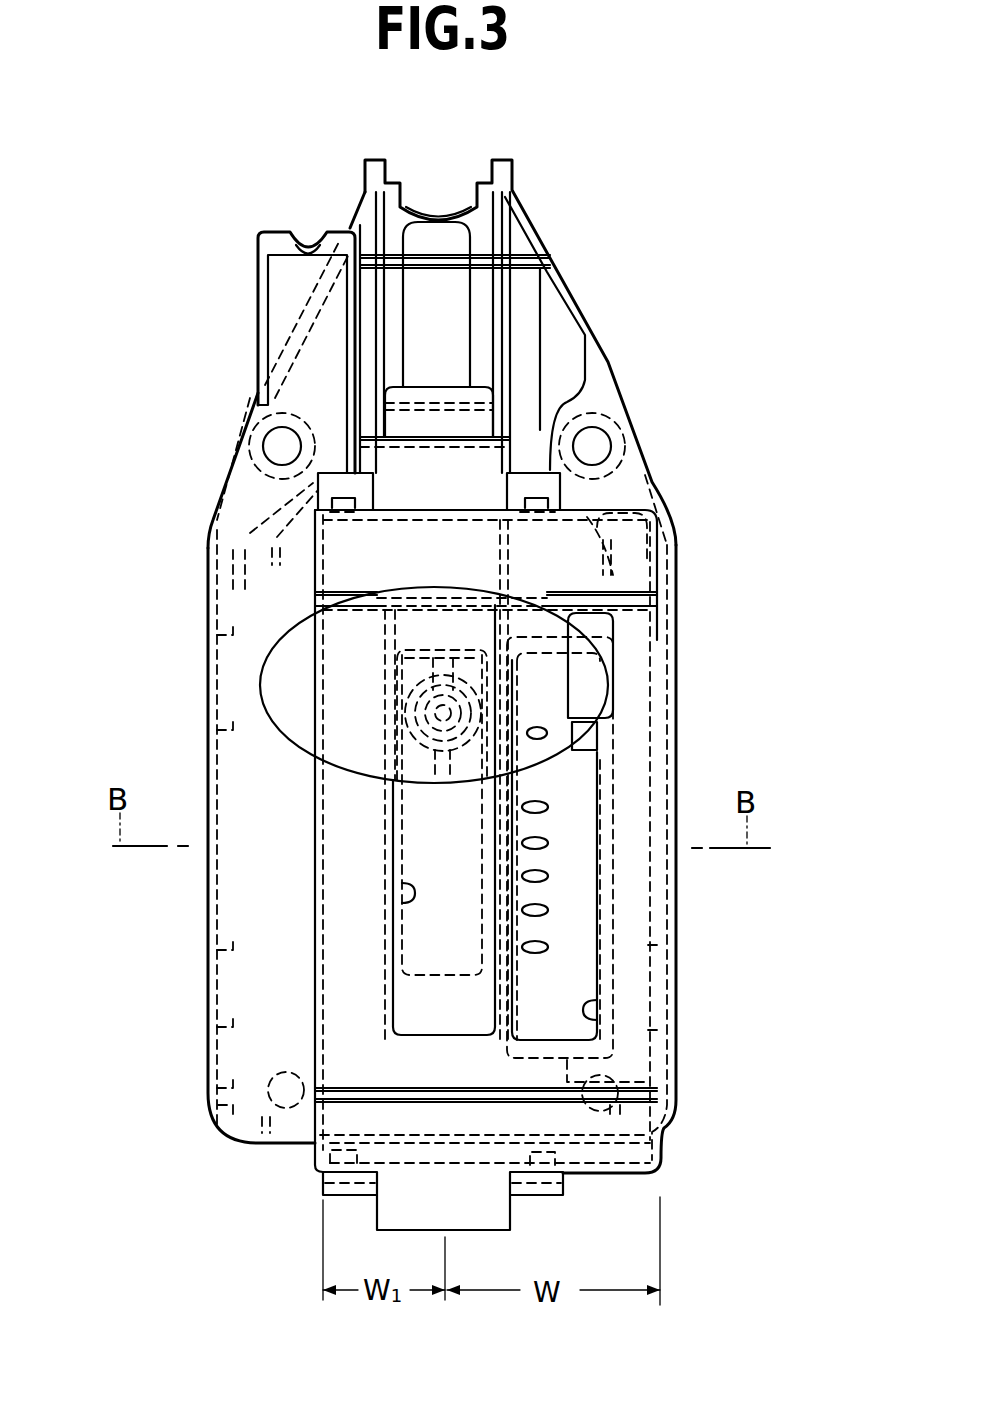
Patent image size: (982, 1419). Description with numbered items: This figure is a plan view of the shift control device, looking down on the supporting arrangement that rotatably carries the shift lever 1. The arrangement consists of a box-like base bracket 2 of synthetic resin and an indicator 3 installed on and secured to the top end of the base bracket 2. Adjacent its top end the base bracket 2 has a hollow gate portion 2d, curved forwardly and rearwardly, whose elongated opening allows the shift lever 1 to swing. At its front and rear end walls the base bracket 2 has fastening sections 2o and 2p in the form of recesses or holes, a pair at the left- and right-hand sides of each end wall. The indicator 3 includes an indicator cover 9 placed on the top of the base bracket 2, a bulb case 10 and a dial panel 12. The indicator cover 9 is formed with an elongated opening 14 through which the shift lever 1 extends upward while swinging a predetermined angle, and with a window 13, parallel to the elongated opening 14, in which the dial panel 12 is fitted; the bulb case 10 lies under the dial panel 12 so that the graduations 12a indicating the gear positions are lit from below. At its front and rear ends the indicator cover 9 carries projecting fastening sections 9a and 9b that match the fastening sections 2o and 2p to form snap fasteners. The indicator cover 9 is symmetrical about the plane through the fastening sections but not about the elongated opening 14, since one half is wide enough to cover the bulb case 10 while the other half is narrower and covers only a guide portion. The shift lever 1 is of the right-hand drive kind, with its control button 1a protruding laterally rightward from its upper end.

The shift lever 1 is at (261, 685).
The control button 1a is at (612, 640).
The base bracket 2 is at (600, 487).
The fastening sections 2o is at (320, 483).
The gate portion 2d is at (407, 893).
The fastening sections 2p is at (340, 1197).
The indicator 3 is at (628, 584).
The indicator cover 9 is at (338, 970).
The fastening sections 9a is at (342, 520).
The fastening sections 9b is at (320, 1155).
The bulb case 10 is at (650, 738).
The dial panel 12 is at (587, 977).
The graduations 12a is at (540, 805).
The window 13 is at (588, 1012).
The elongated opening 14 is at (445, 1037).